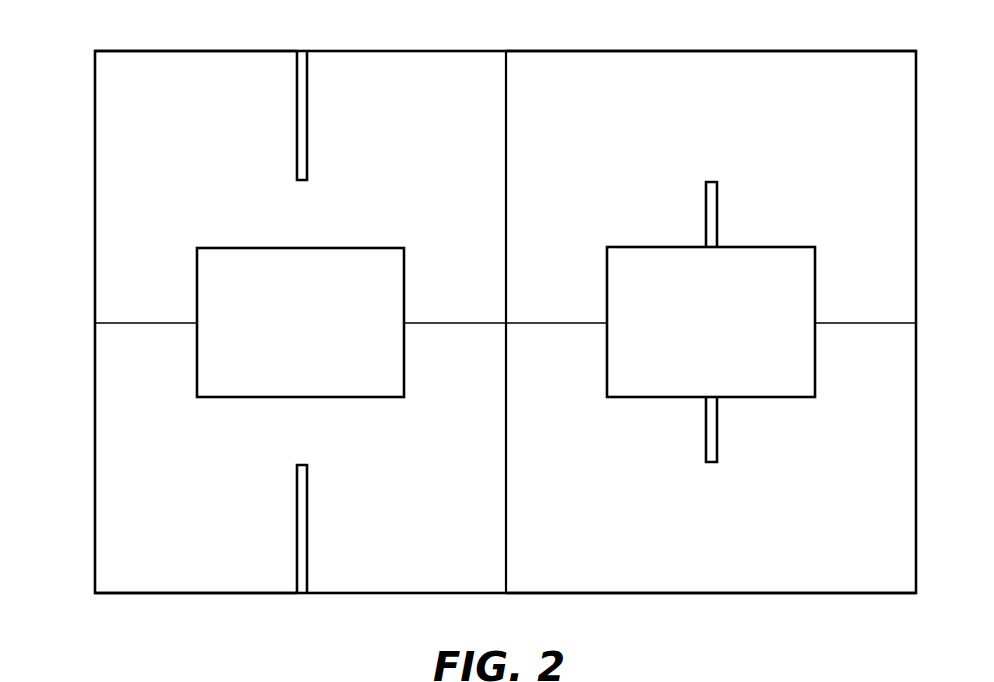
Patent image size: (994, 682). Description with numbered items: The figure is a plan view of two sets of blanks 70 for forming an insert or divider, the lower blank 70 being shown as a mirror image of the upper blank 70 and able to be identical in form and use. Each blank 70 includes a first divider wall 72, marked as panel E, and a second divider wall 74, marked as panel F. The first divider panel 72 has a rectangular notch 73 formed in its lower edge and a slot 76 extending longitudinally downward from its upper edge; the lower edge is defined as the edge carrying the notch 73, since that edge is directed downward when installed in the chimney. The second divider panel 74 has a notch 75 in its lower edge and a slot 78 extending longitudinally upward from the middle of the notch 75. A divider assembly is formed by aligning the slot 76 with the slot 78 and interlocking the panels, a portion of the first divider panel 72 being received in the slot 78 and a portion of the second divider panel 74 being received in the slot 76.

The blank 70 is at (73, 154).
The first divider wall 72 is at (350, 50).
The second divider wall 74 is at (816, 50).
The rectangular notch 73 is at (359, 257).
The notch 75 is at (771, 250).
The slot 76 is at (307, 121).
The slot 78 is at (717, 203).